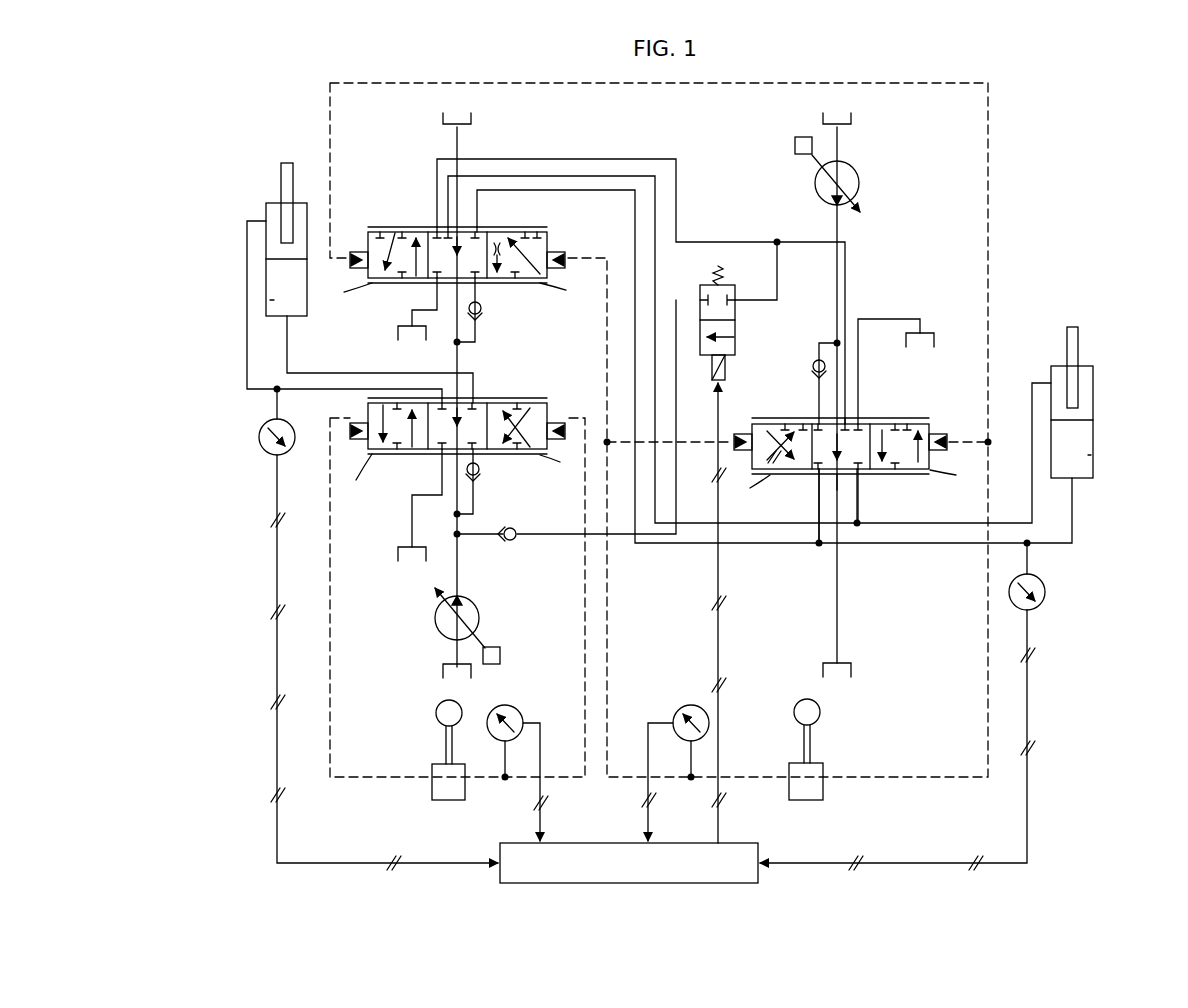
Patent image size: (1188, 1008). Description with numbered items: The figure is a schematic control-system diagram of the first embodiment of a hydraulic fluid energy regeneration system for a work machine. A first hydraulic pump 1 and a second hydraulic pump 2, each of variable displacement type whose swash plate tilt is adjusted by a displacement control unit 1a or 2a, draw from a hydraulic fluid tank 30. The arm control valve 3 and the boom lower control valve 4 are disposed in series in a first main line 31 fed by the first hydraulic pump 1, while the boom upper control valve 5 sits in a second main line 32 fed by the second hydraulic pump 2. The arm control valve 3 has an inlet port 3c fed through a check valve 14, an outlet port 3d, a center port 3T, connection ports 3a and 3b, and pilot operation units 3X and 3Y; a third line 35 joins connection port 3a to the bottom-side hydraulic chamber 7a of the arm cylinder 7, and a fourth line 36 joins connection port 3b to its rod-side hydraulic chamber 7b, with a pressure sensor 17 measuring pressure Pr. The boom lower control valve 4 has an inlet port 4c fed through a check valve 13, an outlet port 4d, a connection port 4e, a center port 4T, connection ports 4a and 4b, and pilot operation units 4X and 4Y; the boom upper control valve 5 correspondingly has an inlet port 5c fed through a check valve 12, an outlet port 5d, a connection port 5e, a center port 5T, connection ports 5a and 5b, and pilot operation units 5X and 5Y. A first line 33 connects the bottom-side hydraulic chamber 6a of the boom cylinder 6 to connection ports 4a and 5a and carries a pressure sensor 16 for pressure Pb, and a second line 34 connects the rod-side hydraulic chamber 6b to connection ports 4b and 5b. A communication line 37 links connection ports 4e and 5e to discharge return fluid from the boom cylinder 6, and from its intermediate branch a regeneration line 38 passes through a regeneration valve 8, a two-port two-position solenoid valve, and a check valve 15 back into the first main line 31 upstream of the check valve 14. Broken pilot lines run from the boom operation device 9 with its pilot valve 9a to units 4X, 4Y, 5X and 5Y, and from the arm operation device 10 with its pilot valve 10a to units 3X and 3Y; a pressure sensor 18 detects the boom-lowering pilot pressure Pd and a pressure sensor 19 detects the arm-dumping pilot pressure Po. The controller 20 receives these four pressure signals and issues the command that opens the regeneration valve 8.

The first hydraulic pump 1 is at (438, 618).
The displacement control unit 1a is at (496, 647).
The second hydraulic pump 2 is at (856, 174).
The displacement control unit 2a is at (803, 137).
The arm control valve 3 is at (524, 400).
The connection port 3a is at (474, 398).
The connection port 3b is at (444, 398).
The inlet port 3c is at (477, 458).
The outlet port 3d is at (441, 459).
The center port 3T is at (455, 494).
The pilot operation unit 3X is at (350, 418).
The pilot operation unit 3Y is at (560, 418).
The boom lower control valve 4 is at (400, 228).
The connection port 4a is at (480, 228).
The connection port 4b is at (448, 228).
The inlet port 4c is at (478, 288).
The outlet port 4d is at (437, 288).
The connection port 4e is at (437, 228).
The center port 4T is at (458, 225).
The pilot operation unit 4X is at (350, 258).
The pilot operation unit 4Y is at (560, 258).
The boom upper control valve 5 is at (920, 418).
The connection port 5a is at (820, 480).
The connection port 5b is at (859, 480).
The inlet port 5c is at (817, 418).
The outlet port 5d is at (861, 418).
The connection port 5e is at (847, 418).
The center port 5T is at (841, 488).
The pilot operation unit 5X is at (945, 440).
The pilot operation unit 5Y is at (740, 440).
The boom cylinder 6 is at (1094, 435).
The bottom-side hydraulic chamber 6a is at (1088, 455).
The rod-side hydraulic chamber 6b is at (1088, 380).
The arm cylinder 7 is at (268, 274).
The bottom-side hydraulic chamber 7a is at (275, 300).
The rod-side hydraulic chamber 7b is at (270, 213).
The regeneration valve 8 is at (700, 290).
The boom operation device 9 is at (796, 702).
The pilot valve 9a is at (808, 803).
The arm operation device 10 is at (436, 715).
The pilot valve 10a is at (450, 803).
The check valve 12 is at (812, 365).
The check valve 13 is at (482, 318).
The check valve 14 is at (486, 486).
The check valve 15 is at (511, 548).
The pressure sensor 16 is at (1047, 592).
The pressure sensor 17 is at (259, 437).
The pressure sensor 18 is at (679, 705).
The pressure sensor 19 is at (515, 705).
The controller 20 is at (665, 842).
The hydraulic fluid tank 30 is at (468, 122).
The first main line 31 is at (456, 575).
The second main line 32 is at (840, 238).
The first line 33 is at (1075, 528).
The second line 34 is at (1032, 378).
The third line 35 is at (292, 370).
The fourth line 36 is at (247, 356).
The communication line 37 is at (678, 203).
The regeneration line 38 is at (614, 536).